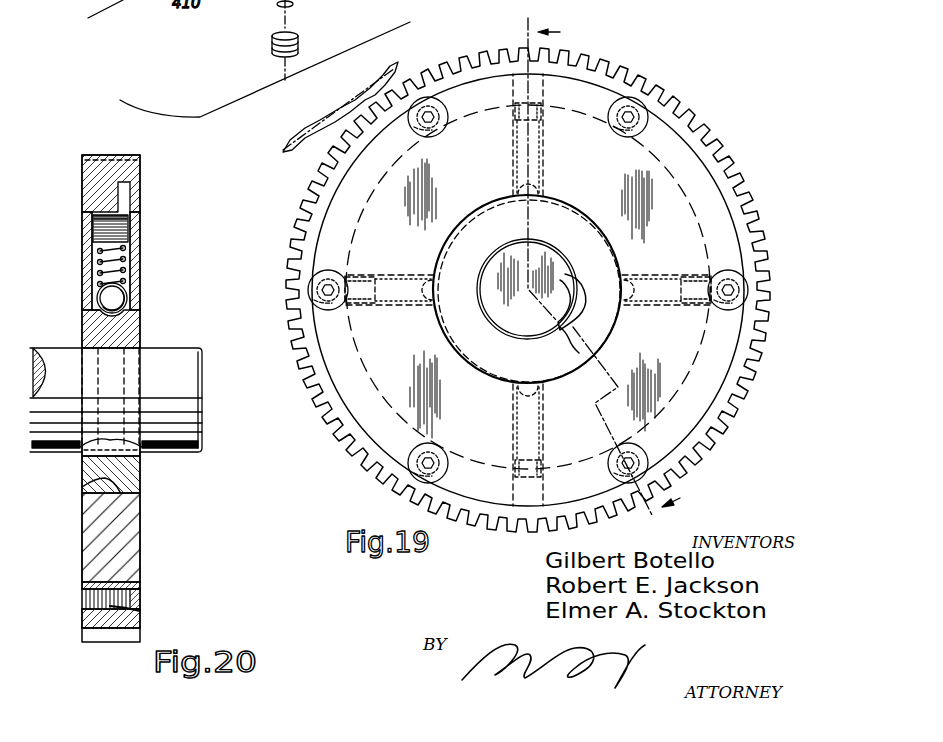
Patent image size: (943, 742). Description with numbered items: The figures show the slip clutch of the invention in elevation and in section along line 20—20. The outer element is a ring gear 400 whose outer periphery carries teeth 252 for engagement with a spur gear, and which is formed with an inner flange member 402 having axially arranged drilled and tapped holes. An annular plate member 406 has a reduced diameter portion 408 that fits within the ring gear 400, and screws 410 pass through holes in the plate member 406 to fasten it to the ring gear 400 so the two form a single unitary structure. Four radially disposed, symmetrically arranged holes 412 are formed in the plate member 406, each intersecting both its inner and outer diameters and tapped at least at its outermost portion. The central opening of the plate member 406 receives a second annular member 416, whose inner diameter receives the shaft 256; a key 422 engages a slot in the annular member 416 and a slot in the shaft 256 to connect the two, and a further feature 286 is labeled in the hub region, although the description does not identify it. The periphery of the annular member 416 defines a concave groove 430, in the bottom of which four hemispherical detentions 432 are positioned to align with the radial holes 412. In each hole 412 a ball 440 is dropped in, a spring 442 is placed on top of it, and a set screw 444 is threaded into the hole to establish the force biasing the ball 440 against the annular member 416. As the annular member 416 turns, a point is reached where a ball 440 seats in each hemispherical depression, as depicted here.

In FIG. 19, the line 20— 20 is at (586, 280).
In FIG. 19, the teeth 252 is at (598, 62).
In FIG. 19, the cam slot 286 is at (607, 328).
In FIG. 19, the ring gear 400 is at (668, 93).
In FIG. 20, the ring gear 400 is at (140, 174).
In FIG. 20, the inner flange member 402 is at (90, 620).
In FIG. 19, the annular plate member 406 is at (690, 218).
In FIG. 20, the annular plate member 406 is at (80, 505).
In FIG. 20, the reduced diameter portion 408 is at (84, 584).
In FIG. 20, the screws 410 is at (140, 600).
In FIG. 20, the radially disposed holes 412 is at (93, 270).
In FIG. 19, the second annular member 416 is at (560, 227).
In FIG. 20, the second annular member 416 is at (140, 472).
In FIG. 19, the key 422 is at (588, 353).
In FIG. 20, the key 422 is at (80, 452).
In FIG. 20, the concave groove 430 is at (95, 479).
In FIG. 20, the hemispherical detentions 432 is at (95, 312).
In FIG. 19, the ball 440 is at (426, 311).
In FIG. 20, the ball 440 is at (126, 302).
In FIG. 19, the spring 442 is at (381, 309).
In FIG. 20, the spring 442 is at (124, 262).
In FIG. 19, the set screw 444 is at (366, 268).
In FIG. 20, the set screw 444 is at (122, 228).
In FIG. 20, the shaft 256 is at (190, 348).